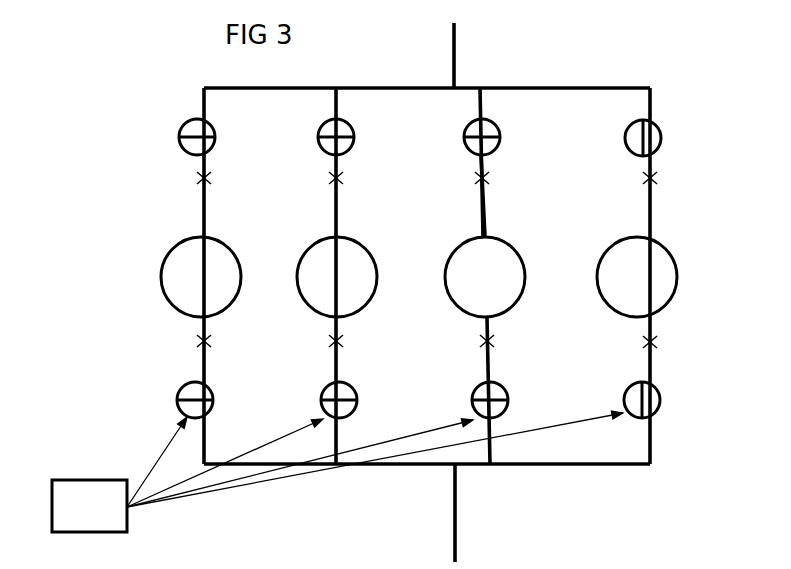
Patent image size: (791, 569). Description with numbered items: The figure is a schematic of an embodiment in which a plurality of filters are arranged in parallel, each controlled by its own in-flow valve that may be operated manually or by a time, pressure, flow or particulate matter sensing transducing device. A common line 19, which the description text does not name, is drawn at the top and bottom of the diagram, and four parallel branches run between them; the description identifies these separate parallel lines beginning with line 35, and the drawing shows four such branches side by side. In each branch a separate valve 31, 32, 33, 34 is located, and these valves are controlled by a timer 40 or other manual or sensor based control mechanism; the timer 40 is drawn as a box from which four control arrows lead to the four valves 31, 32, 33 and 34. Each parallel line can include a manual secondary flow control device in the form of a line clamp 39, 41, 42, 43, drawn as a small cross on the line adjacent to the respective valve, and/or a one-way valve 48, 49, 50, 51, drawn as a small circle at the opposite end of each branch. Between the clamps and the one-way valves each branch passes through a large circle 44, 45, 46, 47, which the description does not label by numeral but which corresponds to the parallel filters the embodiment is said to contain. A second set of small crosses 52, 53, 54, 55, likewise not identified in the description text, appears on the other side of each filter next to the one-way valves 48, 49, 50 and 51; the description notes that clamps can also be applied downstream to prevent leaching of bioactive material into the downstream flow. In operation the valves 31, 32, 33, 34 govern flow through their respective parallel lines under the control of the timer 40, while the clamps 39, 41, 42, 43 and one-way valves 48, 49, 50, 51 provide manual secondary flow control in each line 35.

The main fluid line 19 is at (457, 57).
The valve 31 is at (661, 401).
The valve 32 is at (510, 397).
The valve 33 is at (359, 400).
The valve 34 is at (215, 400).
The parallel line 35 is at (654, 370).
The line clamp 39 is at (660, 342).
The line clamp 41 is at (496, 341).
The line clamp 42 is at (346, 341).
The line clamp 43 is at (214, 341).
The filter vessel 44 is at (667, 250).
The filter vessel 45 is at (514, 249).
The filter vessel 46 is at (366, 250).
The filter vessel 47 is at (231, 251).
The one-way valve 48 is at (662, 131).
The one-way valve 49 is at (501, 133).
The one-way valve 50 is at (355, 134).
The one-way valve 51 is at (216, 136).
The valve 52 is at (660, 178).
The valve 53 is at (491, 178).
The valve 54 is at (345, 178).
The valve 55 is at (213, 178).
The timer 40 is at (97, 519).